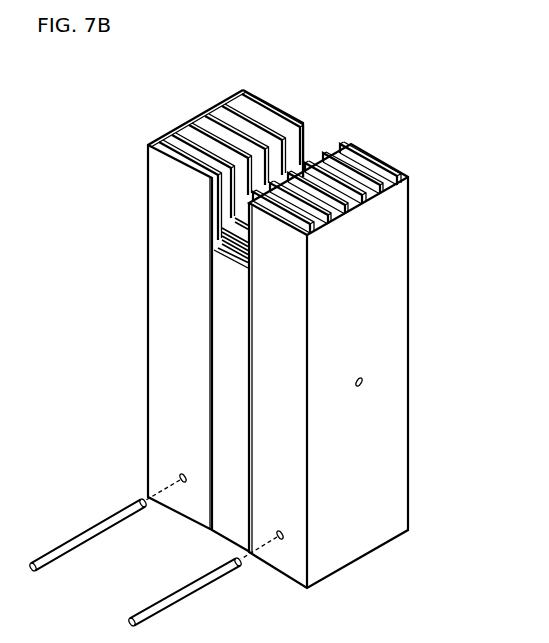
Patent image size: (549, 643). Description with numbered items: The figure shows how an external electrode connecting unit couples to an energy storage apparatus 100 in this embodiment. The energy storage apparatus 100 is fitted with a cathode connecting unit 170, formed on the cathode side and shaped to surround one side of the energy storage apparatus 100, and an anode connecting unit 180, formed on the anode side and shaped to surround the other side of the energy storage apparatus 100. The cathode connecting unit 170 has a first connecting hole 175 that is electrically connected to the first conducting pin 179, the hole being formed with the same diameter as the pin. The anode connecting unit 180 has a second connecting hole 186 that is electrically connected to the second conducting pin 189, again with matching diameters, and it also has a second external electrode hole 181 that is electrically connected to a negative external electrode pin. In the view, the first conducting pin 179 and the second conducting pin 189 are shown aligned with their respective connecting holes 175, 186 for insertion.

The cathode connecting unit 170 is at (160, 230).
The energy storage apparatus 100 is at (227, 378).
The first connecting hole 175 is at (179, 479).
The first conducting pin 179 is at (75, 542).
The anode connecting unit 180 is at (395, 247).
The second external electrode hole 181 is at (363, 382).
The second connecting hole 186 is at (285, 538).
The second conducting pin 189 is at (177, 600).